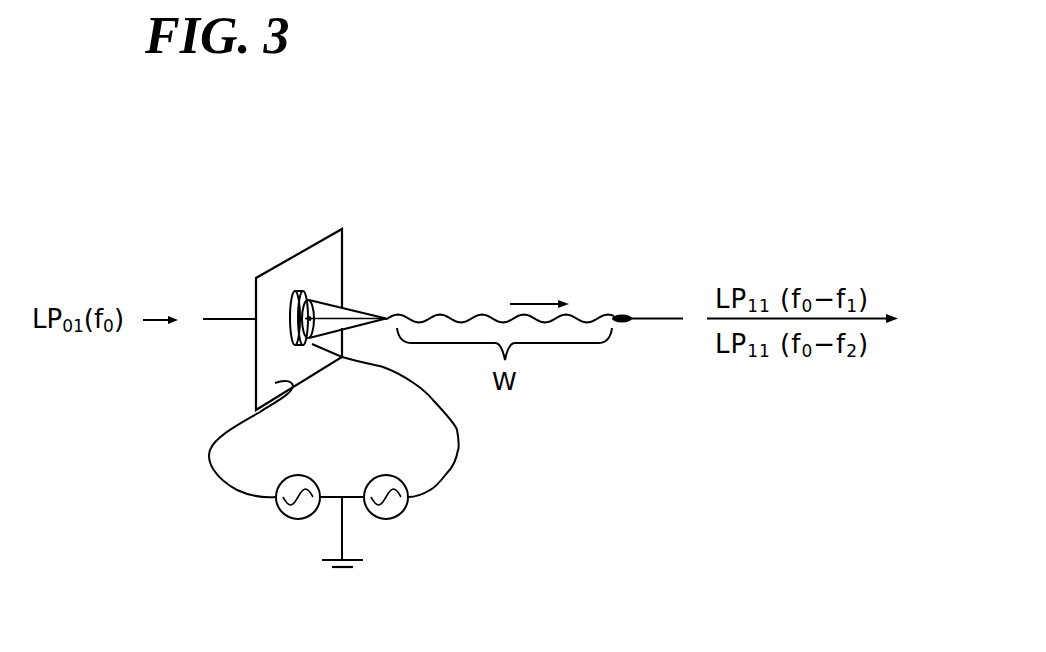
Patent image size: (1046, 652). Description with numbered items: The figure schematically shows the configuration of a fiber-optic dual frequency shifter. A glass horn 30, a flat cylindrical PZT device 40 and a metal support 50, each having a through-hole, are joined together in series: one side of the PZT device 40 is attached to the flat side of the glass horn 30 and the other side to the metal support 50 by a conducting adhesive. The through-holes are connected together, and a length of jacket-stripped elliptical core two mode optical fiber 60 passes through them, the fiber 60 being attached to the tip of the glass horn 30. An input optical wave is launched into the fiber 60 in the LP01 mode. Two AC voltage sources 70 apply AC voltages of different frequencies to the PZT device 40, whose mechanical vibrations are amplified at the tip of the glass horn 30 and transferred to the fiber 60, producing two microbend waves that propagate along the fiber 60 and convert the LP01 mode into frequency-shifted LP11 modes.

The glass horn 30 is at (365, 307).
The PZT device 40 is at (305, 289).
The metal support 50 is at (256, 383).
The optical fiber 60 is at (228, 318).
The AC voltage sources 70 is at (215, 487).